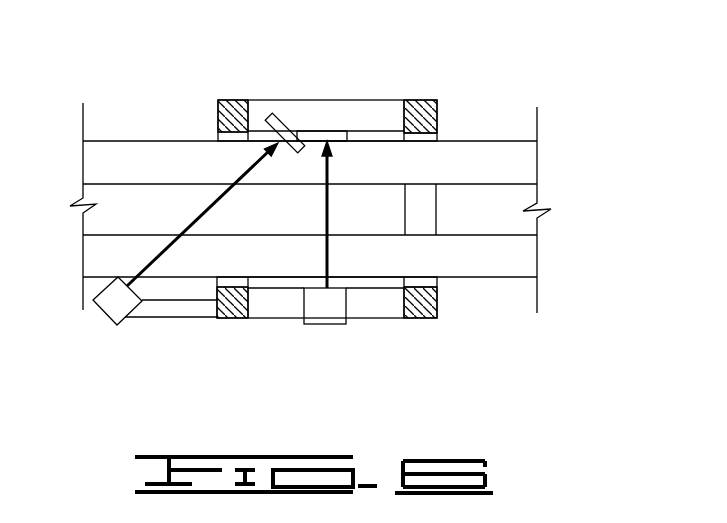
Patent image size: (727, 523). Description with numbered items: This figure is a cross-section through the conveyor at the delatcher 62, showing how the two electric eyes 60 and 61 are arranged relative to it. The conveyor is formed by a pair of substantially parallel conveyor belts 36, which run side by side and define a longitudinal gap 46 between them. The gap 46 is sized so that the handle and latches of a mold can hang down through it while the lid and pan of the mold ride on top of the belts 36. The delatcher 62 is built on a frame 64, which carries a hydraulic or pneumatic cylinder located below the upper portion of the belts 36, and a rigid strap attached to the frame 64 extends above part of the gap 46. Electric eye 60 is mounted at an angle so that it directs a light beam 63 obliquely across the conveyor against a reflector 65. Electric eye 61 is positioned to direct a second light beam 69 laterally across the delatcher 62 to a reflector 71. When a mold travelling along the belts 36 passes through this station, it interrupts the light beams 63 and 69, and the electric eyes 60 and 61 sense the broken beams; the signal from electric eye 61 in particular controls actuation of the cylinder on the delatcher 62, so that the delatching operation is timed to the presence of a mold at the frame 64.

The conveyor belts 36 is at (485, 152).
The longitudinal gap 46 is at (490, 212).
The electric eye 60 is at (105, 302).
The electric eye 61 is at (316, 317).
The delatcher 62 is at (427, 323).
The light beam 63 is at (202, 213).
The frame 64 is at (418, 100).
The reflector 65 is at (273, 106).
The light beam 69 is at (352, 247).
The reflector 71 is at (333, 126).